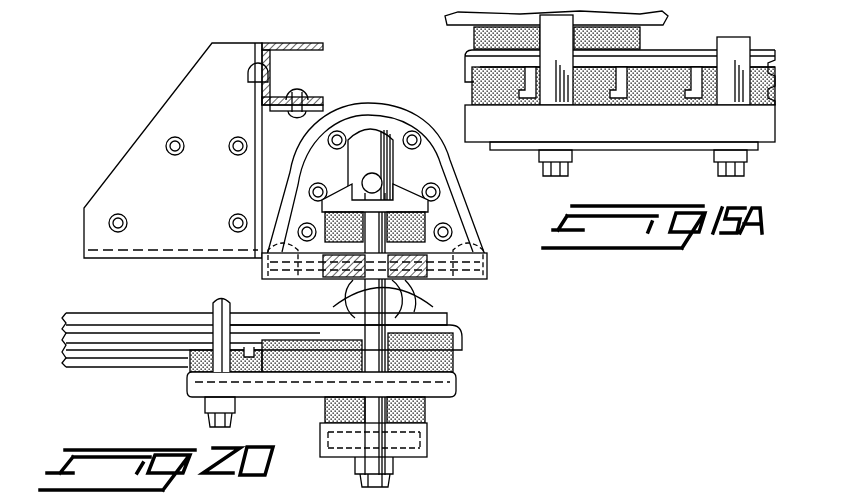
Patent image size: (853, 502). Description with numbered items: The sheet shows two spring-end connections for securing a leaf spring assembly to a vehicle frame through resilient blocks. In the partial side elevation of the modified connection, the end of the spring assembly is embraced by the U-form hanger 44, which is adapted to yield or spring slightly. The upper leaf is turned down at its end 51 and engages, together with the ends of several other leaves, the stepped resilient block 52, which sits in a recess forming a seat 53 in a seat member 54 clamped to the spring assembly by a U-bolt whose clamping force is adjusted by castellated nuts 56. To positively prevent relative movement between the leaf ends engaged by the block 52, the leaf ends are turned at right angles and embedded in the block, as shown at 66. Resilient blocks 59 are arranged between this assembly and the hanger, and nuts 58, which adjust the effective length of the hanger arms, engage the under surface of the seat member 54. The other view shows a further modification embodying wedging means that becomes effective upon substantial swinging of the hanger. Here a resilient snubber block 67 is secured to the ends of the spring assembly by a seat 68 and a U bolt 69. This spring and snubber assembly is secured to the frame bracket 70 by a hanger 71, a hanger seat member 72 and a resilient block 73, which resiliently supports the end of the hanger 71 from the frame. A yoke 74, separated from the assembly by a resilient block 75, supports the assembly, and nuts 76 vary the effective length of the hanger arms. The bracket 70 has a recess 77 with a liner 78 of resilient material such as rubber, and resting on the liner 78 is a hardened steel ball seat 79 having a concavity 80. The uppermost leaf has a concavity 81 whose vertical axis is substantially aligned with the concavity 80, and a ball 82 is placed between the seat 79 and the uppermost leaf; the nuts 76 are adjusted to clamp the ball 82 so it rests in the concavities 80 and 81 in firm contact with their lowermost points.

In FIG. 15A, the hanger 44 is at (550, 106).
In FIG. 15A, the turned-down end of upper leaf 51 is at (468, 58).
In FIG. 15A, the resilient block 52 is at (488, 88).
In FIG. 15A, the seat 53 is at (738, 52).
In FIG. 15A, the seat member 54 is at (652, 120).
In FIG. 15A, the castellated nuts 56 is at (716, 155).
In FIG. 15A, the nuts 58 is at (558, 158).
In FIG. 15A, the resilient blocks 59 is at (478, 35).
In FIG. 15A, the turned leaf ends 66 is at (628, 92).
In FIG. 20, the resilient snubber block 67 is at (457, 351).
In FIG. 20, the seat 68 is at (300, 394).
In FIG. 20, the U bolt 69 is at (213, 302).
In FIG. 20, the bracket 70 is at (465, 178).
In FIG. 20, the hanger 71 is at (446, 330).
In FIG. 20, the hanger seat member 72 is at (403, 199).
In FIG. 20, the resilient block 73 is at (432, 230).
In FIG. 20, the yoke 74 is at (430, 437).
In FIG. 20, the resilient block 75 is at (428, 410).
In FIG. 20, the nuts 76 is at (393, 467).
In FIG. 20, the recess 77 is at (333, 272).
In FIG. 20, the liner 78 is at (352, 283).
In FIG. 20, the ball seat 79 is at (436, 283).
In FIG. 20, the concavity 80 is at (488, 266).
In FIG. 20, the concavity 81 is at (345, 318).
In FIG. 20, the ball 82 is at (397, 290).